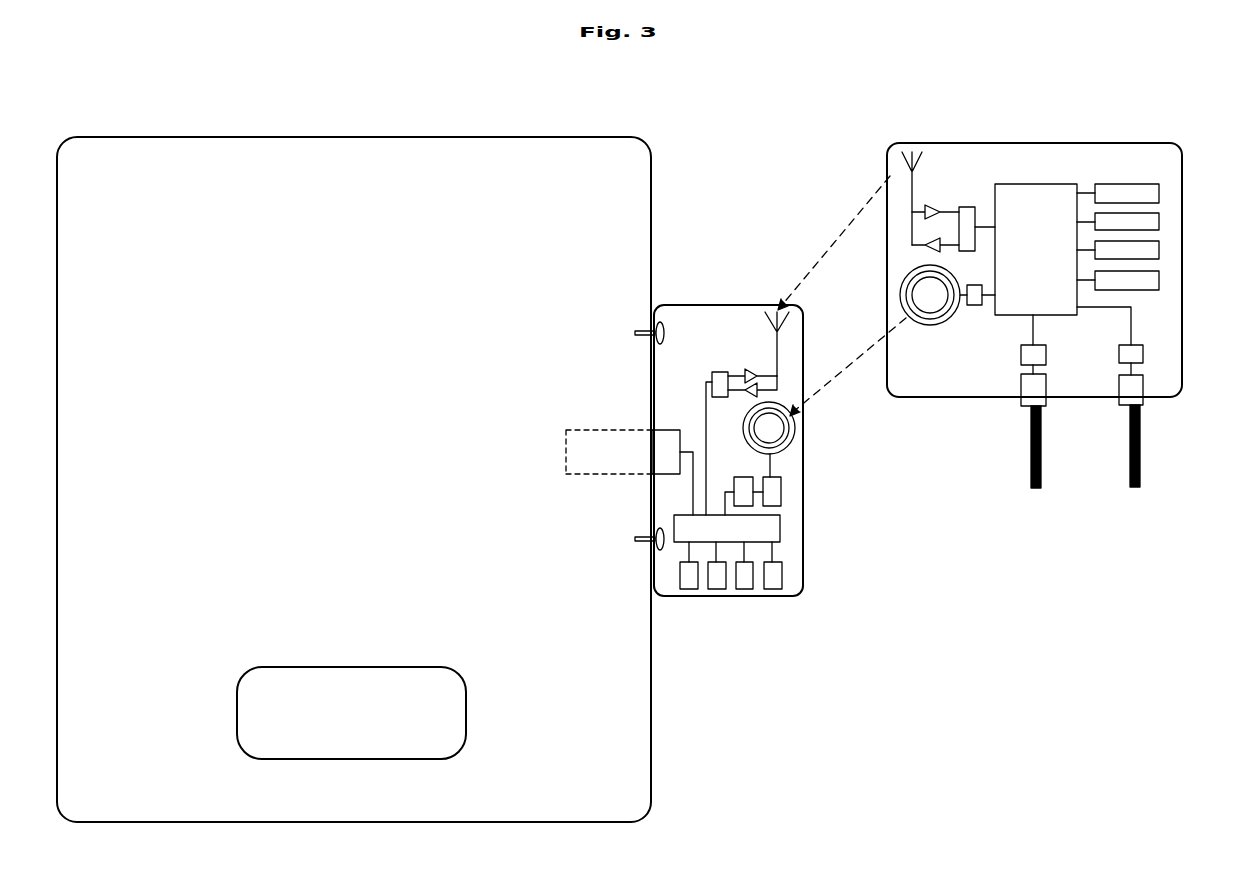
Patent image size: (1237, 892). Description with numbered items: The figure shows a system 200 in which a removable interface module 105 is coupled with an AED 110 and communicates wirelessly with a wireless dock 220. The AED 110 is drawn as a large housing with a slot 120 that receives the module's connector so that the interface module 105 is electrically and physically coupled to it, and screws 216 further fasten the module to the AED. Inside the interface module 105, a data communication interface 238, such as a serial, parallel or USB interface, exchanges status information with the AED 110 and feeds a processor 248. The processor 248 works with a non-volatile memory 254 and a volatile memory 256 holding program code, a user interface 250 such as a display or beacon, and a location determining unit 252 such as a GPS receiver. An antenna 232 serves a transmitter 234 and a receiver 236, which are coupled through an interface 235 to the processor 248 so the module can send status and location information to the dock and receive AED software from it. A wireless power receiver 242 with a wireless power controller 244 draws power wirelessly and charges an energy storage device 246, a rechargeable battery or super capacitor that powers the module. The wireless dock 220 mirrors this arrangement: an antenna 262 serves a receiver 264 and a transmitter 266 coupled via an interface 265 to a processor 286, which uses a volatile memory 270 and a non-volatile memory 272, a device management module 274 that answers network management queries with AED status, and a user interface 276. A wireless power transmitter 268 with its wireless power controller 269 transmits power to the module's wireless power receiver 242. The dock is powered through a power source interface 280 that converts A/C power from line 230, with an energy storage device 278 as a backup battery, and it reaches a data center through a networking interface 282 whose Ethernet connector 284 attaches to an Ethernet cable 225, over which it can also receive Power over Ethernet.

The AED 110 is at (238, 137).
The interface module 105 is at (673, 305).
The slot 120 is at (583, 430).
The system 200 is at (756, 166).
The screws 216 is at (643, 338).
The wireless dock 220 is at (1148, 143).
The Ethernet cable 225 is at (1141, 437).
The line 230 is at (1030, 437).
The antenna 232 is at (767, 313).
The transmitter 234 is at (750, 370).
The interface 235 is at (714, 371).
The receiver 236 is at (750, 396).
The data communication interface 238 is at (666, 430).
The wireless power receiver 242 is at (797, 426).
The wireless power controller 244 is at (750, 477).
The energy storage device 246 is at (783, 478).
The processor 248 is at (781, 523).
The user interface 250 is at (688, 590).
The location determining unit 252 is at (716, 590).
The non-volatile memory 254 is at (744, 590).
The volatile memory 256 is at (772, 590).
The antenna 262 is at (905, 152).
The receiver 264 is at (926, 205).
The interface 265 is at (961, 207).
The transmitter 266 is at (926, 238).
The wireless power transmitter 268 is at (902, 288).
The wireless power controller 269 is at (965, 306).
The volatile memory 270 is at (1159, 184).
The non-volatile memory 272 is at (1159, 213).
The device management module 274 is at (1159, 241).
The user interface 276 is at (1159, 271).
The energy storage device 278 is at (1046, 347).
The power source interface 280 is at (1046, 378).
The networking interface 282 is at (1141, 348).
The Ethernet connector 284 is at (1143, 380).
The processor 286 is at (1005, 184).